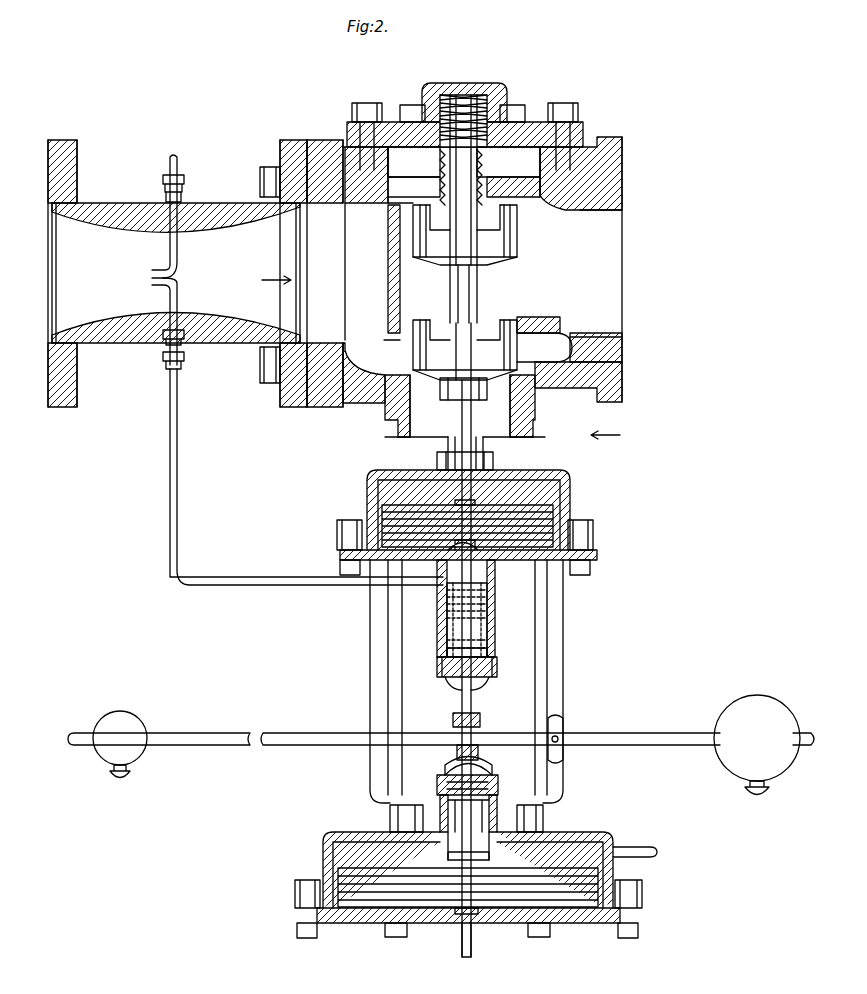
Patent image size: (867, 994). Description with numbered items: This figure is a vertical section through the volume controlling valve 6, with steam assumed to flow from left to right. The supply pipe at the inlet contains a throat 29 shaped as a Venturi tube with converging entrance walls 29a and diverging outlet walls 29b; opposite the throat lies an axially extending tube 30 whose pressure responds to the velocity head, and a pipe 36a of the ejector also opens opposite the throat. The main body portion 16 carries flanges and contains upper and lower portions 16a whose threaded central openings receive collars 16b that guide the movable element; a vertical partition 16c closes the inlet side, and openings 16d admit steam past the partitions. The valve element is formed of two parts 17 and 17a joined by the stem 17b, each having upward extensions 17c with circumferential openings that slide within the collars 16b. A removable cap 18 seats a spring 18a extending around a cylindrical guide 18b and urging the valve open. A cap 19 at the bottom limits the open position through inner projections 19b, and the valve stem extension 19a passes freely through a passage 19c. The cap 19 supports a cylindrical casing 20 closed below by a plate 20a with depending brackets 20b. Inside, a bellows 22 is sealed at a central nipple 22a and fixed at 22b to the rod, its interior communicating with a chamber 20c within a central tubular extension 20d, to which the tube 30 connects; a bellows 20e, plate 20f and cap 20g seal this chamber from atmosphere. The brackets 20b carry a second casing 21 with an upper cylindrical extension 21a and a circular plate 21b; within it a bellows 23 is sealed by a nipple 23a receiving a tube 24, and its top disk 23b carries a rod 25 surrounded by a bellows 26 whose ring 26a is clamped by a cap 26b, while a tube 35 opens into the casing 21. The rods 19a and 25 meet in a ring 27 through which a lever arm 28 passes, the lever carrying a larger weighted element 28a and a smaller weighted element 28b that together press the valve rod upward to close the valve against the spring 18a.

The volume controlling valve 6 is at (605, 436).
The main body portion 16 is at (322, 138).
The upper and lower portions 16a is at (580, 330).
The collars 16b is at (520, 210).
The vertical partition 16c is at (388, 283).
The openings 16d is at (385, 190).
The valve element upper part 17 is at (500, 257).
The valve element lower part 17a is at (480, 345).
The stem 17b is at (450, 296).
The upward extensions 17c is at (420, 228).
The removable cap 18 is at (535, 120).
The spring 18a is at (416, 176).
The cylindrical guide 18b is at (480, 160).
The cap 19 is at (533, 432).
The valve stem extension 19a is at (495, 460).
The inner projections 19b is at (455, 405).
The passage 19c is at (446, 447).
The cylindrical casing 20 is at (572, 497).
The plate 20a is at (425, 565).
The depending brackets 20b is at (370, 680).
The chamber 20c is at (492, 608).
The central tubular extension 20d is at (447, 628).
The bellows 20e is at (490, 650).
The plate 20f is at (487, 680).
The cap 20g is at (445, 683).
The cylindrical casing 21 is at (322, 838).
The upper cylindrical extension 21a is at (490, 805).
The circular plate 21b is at (580, 923).
The expansible and compressible element 22 is at (500, 520).
The central nipple 22a is at (480, 553).
The bellows top fixing 22b is at (455, 503).
The expansible and compressible element 23 is at (535, 875).
The central nipple 23a is at (482, 913).
The disk 23b is at (485, 862).
The tube 24 is at (460, 955).
The rod 25 is at (457, 762).
The bellows 26 is at (437, 788).
The plate or ring 26a is at (490, 772).
The cap 26b is at (485, 770).
The ring 27 is at (482, 718).
The lever arm 28 is at (441, 732).
The weighted element 28a is at (757, 745).
The weighted element 28b is at (120, 744).
The opening or throat 29 is at (150, 284).
The converging entrance walls 29a is at (95, 243).
The diverging outlet walls 29b is at (250, 296).
The axially extending tube 30 is at (178, 436).
The tube 35 is at (648, 847).
The pipe 36a is at (180, 166).